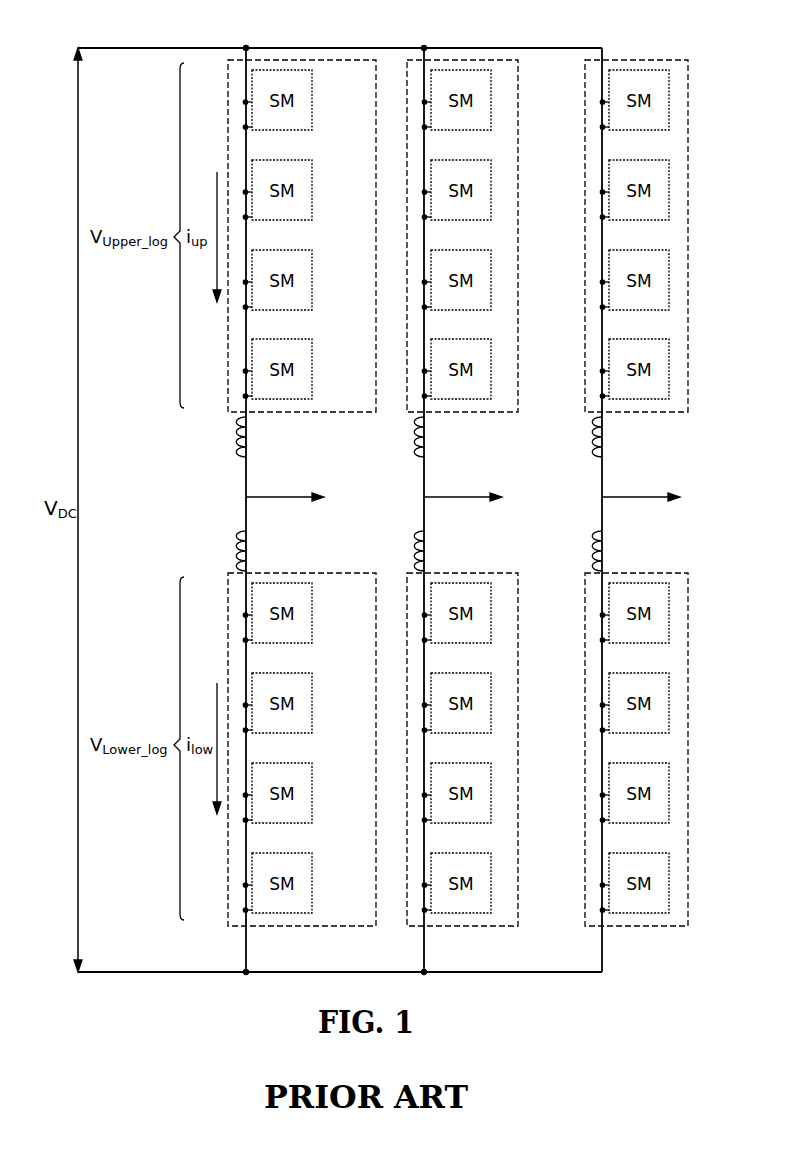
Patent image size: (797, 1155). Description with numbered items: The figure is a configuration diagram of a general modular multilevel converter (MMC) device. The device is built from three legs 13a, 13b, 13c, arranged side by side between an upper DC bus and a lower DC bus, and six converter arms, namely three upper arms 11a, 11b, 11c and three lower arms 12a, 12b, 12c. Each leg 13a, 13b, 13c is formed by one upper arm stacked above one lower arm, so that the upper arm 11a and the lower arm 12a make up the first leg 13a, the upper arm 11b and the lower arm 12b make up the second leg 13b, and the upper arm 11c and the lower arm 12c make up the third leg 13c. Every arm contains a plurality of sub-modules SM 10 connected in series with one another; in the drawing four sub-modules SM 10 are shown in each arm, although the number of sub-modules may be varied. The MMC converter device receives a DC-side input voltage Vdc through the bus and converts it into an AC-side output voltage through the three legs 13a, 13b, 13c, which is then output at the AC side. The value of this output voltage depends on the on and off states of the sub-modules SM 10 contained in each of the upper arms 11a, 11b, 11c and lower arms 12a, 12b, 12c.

The sub-module 10 is at (482, 114).
The upper arm 11a is at (273, 58).
The upper arm 11b is at (489, 211).
The upper arm 11c is at (631, 58).
The lower arm 12a is at (275, 928).
The lower arm 12b is at (455, 928).
The lower arm 12c is at (632, 928).
The leg 13a is at (280, 494).
The leg 13b is at (458, 494).
The leg 13c is at (636, 494).